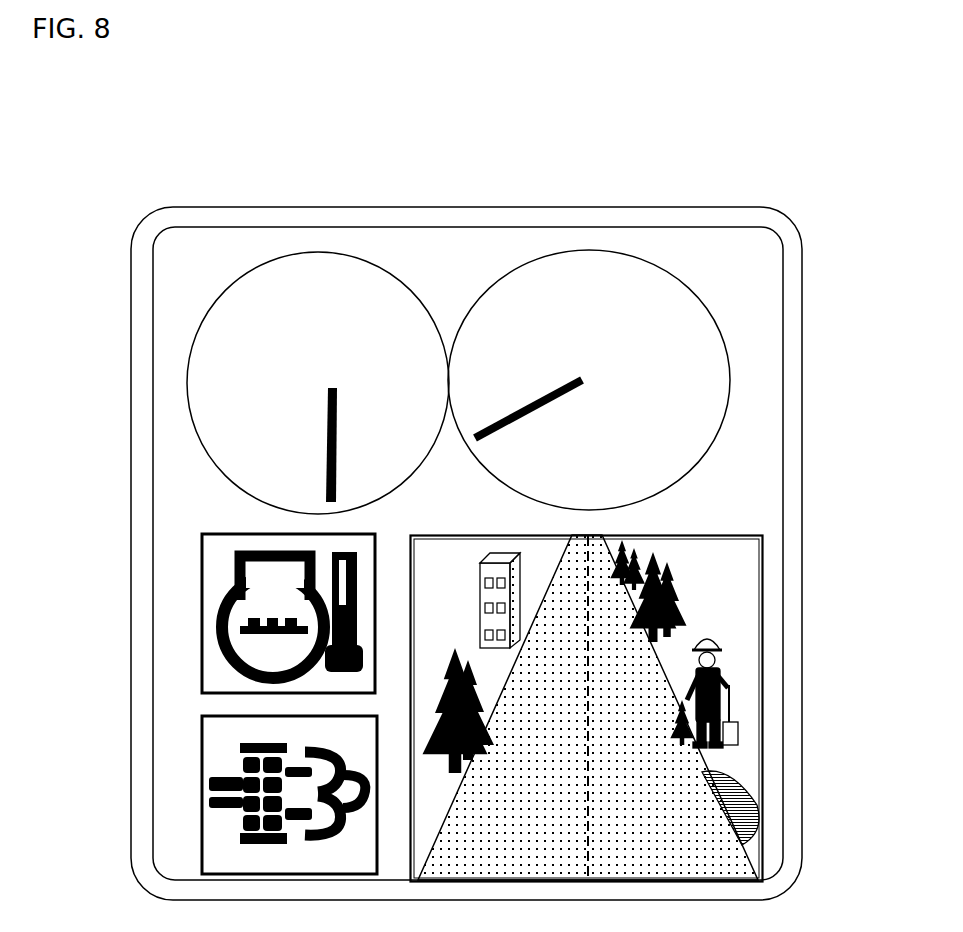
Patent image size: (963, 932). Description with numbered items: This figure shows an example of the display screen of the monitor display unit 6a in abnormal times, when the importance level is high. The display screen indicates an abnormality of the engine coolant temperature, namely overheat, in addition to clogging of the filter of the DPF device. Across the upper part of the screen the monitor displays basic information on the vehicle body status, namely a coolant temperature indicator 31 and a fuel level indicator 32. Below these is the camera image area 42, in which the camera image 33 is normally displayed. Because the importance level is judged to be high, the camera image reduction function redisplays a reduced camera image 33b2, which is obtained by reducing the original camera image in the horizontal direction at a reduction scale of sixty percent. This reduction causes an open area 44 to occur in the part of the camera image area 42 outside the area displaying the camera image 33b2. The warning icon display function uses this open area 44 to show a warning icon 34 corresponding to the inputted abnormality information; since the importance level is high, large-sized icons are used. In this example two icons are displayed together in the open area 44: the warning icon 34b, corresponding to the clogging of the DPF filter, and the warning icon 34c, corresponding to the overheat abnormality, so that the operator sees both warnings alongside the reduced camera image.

The monitor display unit 6a is at (713, 177).
The camera image area 42 is at (817, 698).
The coolant temperature indicator 31 is at (237, 278).
The fuel level indicator 32 is at (493, 285).
The open area 44 is at (177, 550).
The warning icon 34 is at (206, 704).
The warning icon 34c is at (202, 643).
The warning icon 34b is at (209, 828).
The camera image 33 is at (502, 865).
The reduced camera image 33b2 is at (588, 707).